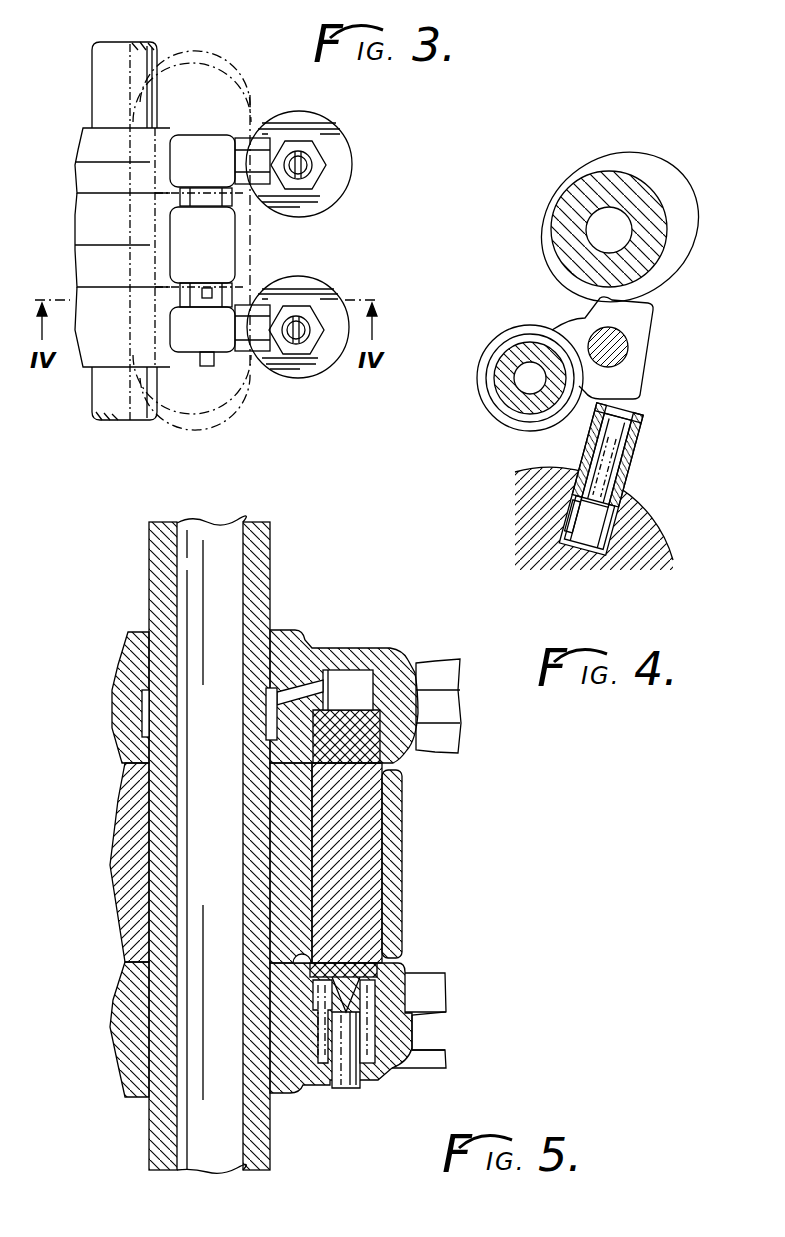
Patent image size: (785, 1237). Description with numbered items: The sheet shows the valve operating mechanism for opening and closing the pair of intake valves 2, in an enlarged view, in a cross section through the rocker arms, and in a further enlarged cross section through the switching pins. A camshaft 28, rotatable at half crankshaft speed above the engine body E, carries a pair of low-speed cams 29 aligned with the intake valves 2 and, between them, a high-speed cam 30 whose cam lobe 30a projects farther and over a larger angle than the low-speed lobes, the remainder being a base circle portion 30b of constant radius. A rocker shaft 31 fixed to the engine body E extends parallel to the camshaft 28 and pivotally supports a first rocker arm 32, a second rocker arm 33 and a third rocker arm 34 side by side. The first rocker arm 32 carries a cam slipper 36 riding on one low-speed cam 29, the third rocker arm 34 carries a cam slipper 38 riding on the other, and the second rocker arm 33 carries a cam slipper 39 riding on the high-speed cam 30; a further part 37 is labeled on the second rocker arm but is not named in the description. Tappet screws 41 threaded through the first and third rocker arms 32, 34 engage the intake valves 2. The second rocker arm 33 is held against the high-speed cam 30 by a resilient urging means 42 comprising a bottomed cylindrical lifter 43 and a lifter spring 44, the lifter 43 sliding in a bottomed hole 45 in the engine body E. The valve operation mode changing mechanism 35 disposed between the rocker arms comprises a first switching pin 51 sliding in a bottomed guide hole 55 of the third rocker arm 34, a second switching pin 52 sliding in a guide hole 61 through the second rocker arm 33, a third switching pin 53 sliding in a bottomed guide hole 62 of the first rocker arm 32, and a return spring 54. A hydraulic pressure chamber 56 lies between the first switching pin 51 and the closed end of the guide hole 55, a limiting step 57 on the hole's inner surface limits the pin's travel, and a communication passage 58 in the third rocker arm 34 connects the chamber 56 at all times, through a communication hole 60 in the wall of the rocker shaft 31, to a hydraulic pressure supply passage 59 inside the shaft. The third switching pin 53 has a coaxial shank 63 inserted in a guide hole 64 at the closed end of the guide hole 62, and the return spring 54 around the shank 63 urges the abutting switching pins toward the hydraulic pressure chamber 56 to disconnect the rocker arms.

In FIG. 3, the intake valves 2 is at (355, 170).
In FIG. 3, the camshaft 28 is at (260, 90).
In FIG. 4, the camshaft 28 is at (572, 190).
In FIG. 3, the low-speed cams 29 is at (258, 148).
In FIG. 3, the high-speed cam 30 is at (274, 272).
In FIG. 4, the high-speed cam 30 is at (664, 262).
In FIG. 4, the cam lobe 30a is at (690, 195).
In FIG. 4, the base circle portion 30b is at (545, 237).
In FIG. 3, the rocker shaft 31 is at (95, 82).
In FIG. 4, the rocker shaft 31 is at (505, 392).
In FIG. 5, the rocker shaft 31 is at (150, 1150).
In FIG. 3, the first rocker arm 32 is at (82, 357).
In FIG. 5, the first rocker arm 32 is at (118, 1062).
In FIG. 3, the second rocker arm 33 is at (82, 222).
In FIG. 4, the second rocker arm 33 is at (638, 378).
In FIG. 5, the second rocker arm 33 is at (118, 817).
In FIG. 3, the third rocker arm 34 is at (80, 174).
In FIG. 5, the third rocker arm 34 is at (116, 667).
In FIG. 3, the valve operation mode changing mechanism 35 is at (198, 366).
In FIG. 4, the valve operation mode changing mechanism 35 is at (642, 336).
In FIG. 5, the valve operation mode changing mechanism 35 is at (392, 863).
In FIG. 3, the cam slipper 36 is at (218, 345).
In FIG. 3, the middle clevis arm 37 is at (230, 260).
In FIG. 4, the middle clevis arm 37 is at (600, 302).
In FIG. 3, the cam slipper 38 is at (196, 150).
In FIG. 3, the cam slipper 39 is at (336, 142).
In FIG. 3, the tappet screws 41 is at (304, 166).
In FIG. 4, the resilient urging means 42 is at (636, 491).
In FIG. 4, the lifter 43 is at (643, 470).
In FIG. 4, the lifter spring 44 is at (580, 558).
In FIG. 4, the bottomed hole 45 is at (617, 554).
In FIG. 4, the engine body E is at (652, 530).
In FIG. 5, the first switching pin 51 is at (326, 706).
In FIG. 4, the second switching pin 52 is at (585, 334).
In FIG. 5, the second switching pin 52 is at (368, 830).
In FIG. 5, the third switching pin 53 is at (394, 975).
In FIG. 5, the return spring 54 is at (368, 1085).
In FIG. 5, the guide hole 55 is at (388, 652).
In FIG. 5, the hydraulic pressure chamber 56 is at (355, 680).
In FIG. 5, the limiting step 57 is at (438, 706).
In FIG. 5, the communication passage 58 is at (306, 690).
In FIG. 4, the hydraulic pressure supply passage 59 is at (520, 368).
In FIG. 5, the hydraulic pressure supply passage 59 is at (224, 842).
In FIG. 5, the communication hole 60 is at (262, 702).
In FIG. 5, the guide hole 61 is at (372, 893).
In FIG. 5, the guide hole 62 is at (374, 1043).
In FIG. 5, the shank 63 is at (345, 1090).
In FIG. 5, the guide hole 64 is at (322, 1082).